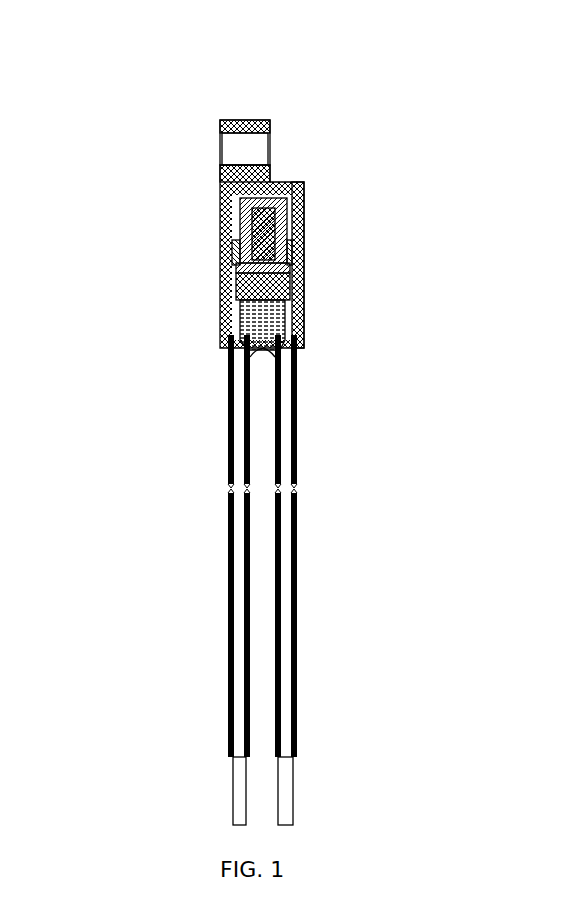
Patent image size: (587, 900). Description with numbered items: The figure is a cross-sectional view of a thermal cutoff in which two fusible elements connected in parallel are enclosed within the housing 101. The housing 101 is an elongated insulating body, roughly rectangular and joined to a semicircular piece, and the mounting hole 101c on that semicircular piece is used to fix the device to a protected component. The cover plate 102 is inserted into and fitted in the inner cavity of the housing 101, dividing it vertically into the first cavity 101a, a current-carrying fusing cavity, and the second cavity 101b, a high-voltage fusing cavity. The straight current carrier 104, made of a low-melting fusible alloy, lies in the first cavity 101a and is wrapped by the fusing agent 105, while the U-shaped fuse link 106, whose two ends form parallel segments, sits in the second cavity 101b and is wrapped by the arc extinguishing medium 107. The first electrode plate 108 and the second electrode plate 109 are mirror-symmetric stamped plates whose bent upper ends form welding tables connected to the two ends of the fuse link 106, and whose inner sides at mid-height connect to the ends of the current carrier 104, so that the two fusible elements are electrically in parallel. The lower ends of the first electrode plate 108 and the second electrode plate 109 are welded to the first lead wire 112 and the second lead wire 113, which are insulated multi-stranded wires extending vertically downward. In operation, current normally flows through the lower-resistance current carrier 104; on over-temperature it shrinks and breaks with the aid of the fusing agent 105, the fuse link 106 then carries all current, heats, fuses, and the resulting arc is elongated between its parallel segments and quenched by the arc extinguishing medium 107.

The housing 101 is at (270, 120).
The first cavity 101a is at (304, 262).
The second cavity 101b is at (278, 197).
The mounting hole 101c is at (250, 153).
The cover plate 102 is at (304, 220).
The current carrier 104 is at (220, 275).
The fusing agent 105 is at (220, 250).
The fuse link 106 is at (220, 197).
The arc extinguishing medium 107 is at (220, 173).
The first electrode plate 108 is at (220, 312).
The second electrode plate 109 is at (304, 313).
The first lead wire 112 is at (233, 453).
The second lead wire 113 is at (285, 453).